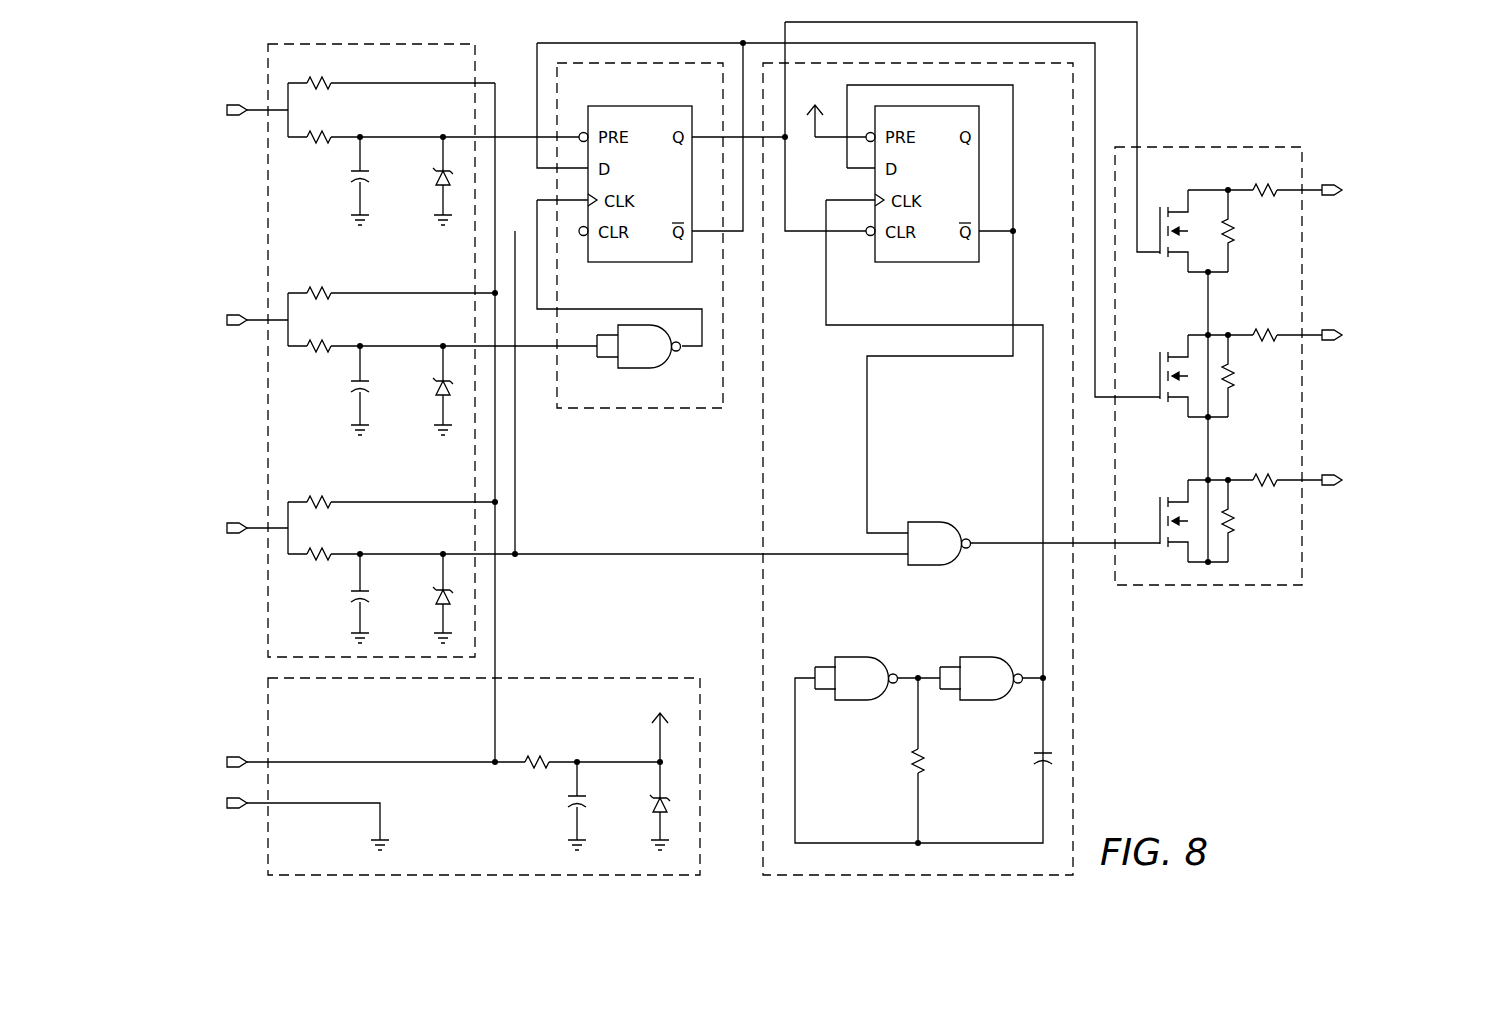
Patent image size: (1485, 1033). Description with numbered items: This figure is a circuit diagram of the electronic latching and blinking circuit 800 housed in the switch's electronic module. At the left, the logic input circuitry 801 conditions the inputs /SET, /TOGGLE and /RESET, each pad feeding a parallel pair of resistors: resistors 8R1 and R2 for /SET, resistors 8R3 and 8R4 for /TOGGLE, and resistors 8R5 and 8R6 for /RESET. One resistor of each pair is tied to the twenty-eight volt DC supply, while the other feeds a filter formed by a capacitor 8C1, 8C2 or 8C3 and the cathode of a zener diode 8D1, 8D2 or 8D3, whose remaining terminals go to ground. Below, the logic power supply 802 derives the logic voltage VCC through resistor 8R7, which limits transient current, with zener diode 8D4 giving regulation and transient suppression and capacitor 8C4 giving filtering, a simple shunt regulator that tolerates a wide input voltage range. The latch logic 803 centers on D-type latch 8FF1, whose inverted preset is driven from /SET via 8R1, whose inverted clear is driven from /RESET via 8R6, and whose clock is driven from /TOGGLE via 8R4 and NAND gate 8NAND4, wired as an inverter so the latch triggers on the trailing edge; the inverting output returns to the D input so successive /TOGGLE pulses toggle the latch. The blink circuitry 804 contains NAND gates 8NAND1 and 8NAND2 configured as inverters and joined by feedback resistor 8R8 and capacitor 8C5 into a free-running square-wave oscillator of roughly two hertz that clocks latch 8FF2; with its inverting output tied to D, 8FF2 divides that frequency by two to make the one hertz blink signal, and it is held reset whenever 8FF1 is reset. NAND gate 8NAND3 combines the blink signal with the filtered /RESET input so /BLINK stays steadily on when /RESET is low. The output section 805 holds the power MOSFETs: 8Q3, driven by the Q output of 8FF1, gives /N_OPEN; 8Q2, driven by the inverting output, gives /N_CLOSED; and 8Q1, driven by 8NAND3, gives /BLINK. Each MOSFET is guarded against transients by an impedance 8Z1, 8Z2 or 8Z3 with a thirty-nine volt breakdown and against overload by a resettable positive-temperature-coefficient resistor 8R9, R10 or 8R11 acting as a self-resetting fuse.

The electronic latching and/or blinking circuit 800 is at (1208, 695).
The logic input circuitry 801 is at (268, 232).
The logic power supply functional unit 802 is at (268, 836).
The latch logic 803 is at (641, 410).
The blink circuitry 804 is at (1073, 635).
The output driver section 805 is at (1215, 146).
The resistor 8R1 is at (320, 73).
The resistor R2 is at (318, 127).
The capacitor 8C1 is at (340, 181).
The zener diode 8D1 is at (422, 181).
The resistor 8R3 is at (320, 283).
The resistor 8R4 is at (320, 336).
The capacitor 8C2 is at (340, 390).
The zener diode 8D2 is at (422, 390).
The resistor 8R5 is at (320, 492).
The resistor 8R6 is at (320, 544).
The capacitor 8C3 is at (340, 598).
The zener diode 8D3 is at (422, 598).
The resistor 8R7 is at (536, 751).
The capacitor 8C4 is at (556, 806).
The zener diode 8D4 is at (639, 806).
The latch 8FF1 is at (635, 198).
The NAND gate 8NAND4 is at (639, 359).
The latch 8FF2 is at (922, 198).
The NAND gate 8NAND3 is at (931, 556).
The NAND gate 8NAND1 is at (856, 691).
The NAND gate 8NAND2 is at (981, 691).
The resistor 8R8 is at (897, 760).
The capacitor 8C5 is at (1024, 763).
The MOSFET 8Q3 is at (1163, 237).
The impedance 8Z3 is at (1248, 231).
The resettable PTC resistor 8R11 is at (1265, 178).
The MOSFET 8Q2 is at (1163, 383).
The impedance 8Z2 is at (1248, 376).
The resettable PTC resistor R10 is at (1264, 323).
The MOSFET 8Q1 is at (1163, 527).
The impedance 8Z1 is at (1248, 521).
The resettable PTC resistor 8R9 is at (1264, 468).